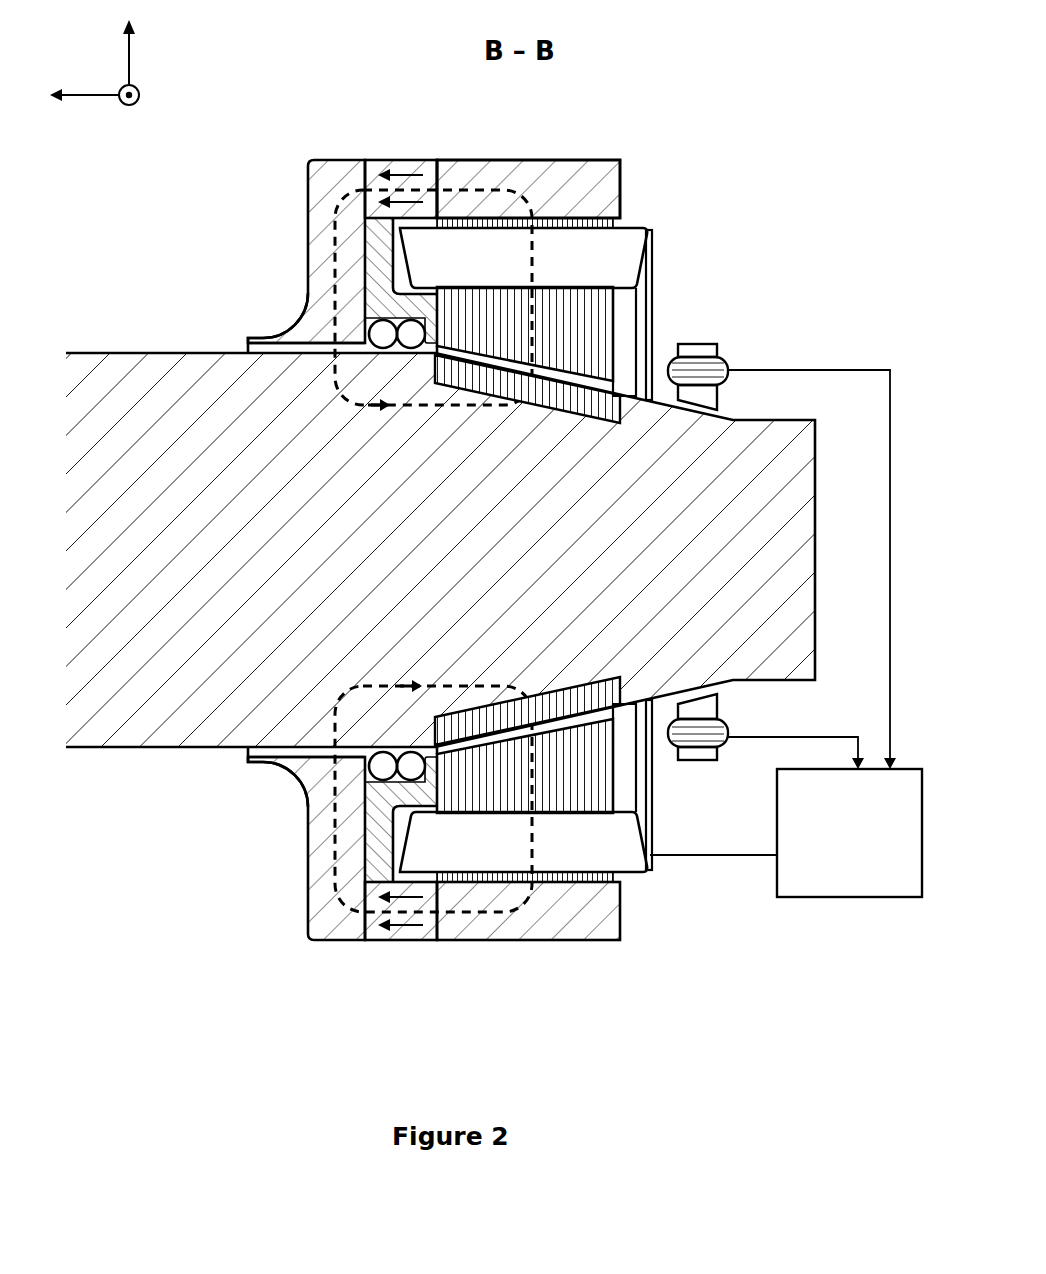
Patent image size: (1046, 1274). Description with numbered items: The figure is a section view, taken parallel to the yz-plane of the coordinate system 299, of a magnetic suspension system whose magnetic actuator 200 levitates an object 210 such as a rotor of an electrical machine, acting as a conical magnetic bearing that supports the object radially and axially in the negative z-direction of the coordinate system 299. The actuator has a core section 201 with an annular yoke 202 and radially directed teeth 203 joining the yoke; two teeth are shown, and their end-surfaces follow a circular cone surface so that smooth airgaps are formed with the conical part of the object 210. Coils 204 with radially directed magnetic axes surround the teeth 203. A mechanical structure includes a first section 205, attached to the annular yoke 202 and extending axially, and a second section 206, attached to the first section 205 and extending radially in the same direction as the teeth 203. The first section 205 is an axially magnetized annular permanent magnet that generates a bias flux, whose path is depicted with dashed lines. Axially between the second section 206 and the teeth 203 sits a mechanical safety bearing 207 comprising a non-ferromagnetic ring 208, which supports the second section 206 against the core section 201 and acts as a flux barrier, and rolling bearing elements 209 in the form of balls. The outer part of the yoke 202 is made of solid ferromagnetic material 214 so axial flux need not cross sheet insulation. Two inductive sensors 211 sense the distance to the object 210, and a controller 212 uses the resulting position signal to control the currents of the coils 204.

The magnetic actuator 200 is at (212, 823).
The core section 201 is at (537, 160).
The annular yoke 202 is at (621, 177).
The radially directed teeth 203 is at (617, 312).
The coils 204 is at (642, 228).
The first section 205 is at (403, 160).
The second section 206 is at (342, 160).
The mechanical safety bearing 207 is at (377, 308).
The non-ferromagnetic ring 208 is at (382, 267).
The rolling bearing elements 209 is at (378, 352).
The object 210 is at (383, 570).
The inductive sensors 211 is at (707, 344).
The controller 212 is at (870, 844).
The solid ferromagnetic material 214 is at (599, 199).
The coordinate system 299 is at (109, 69).